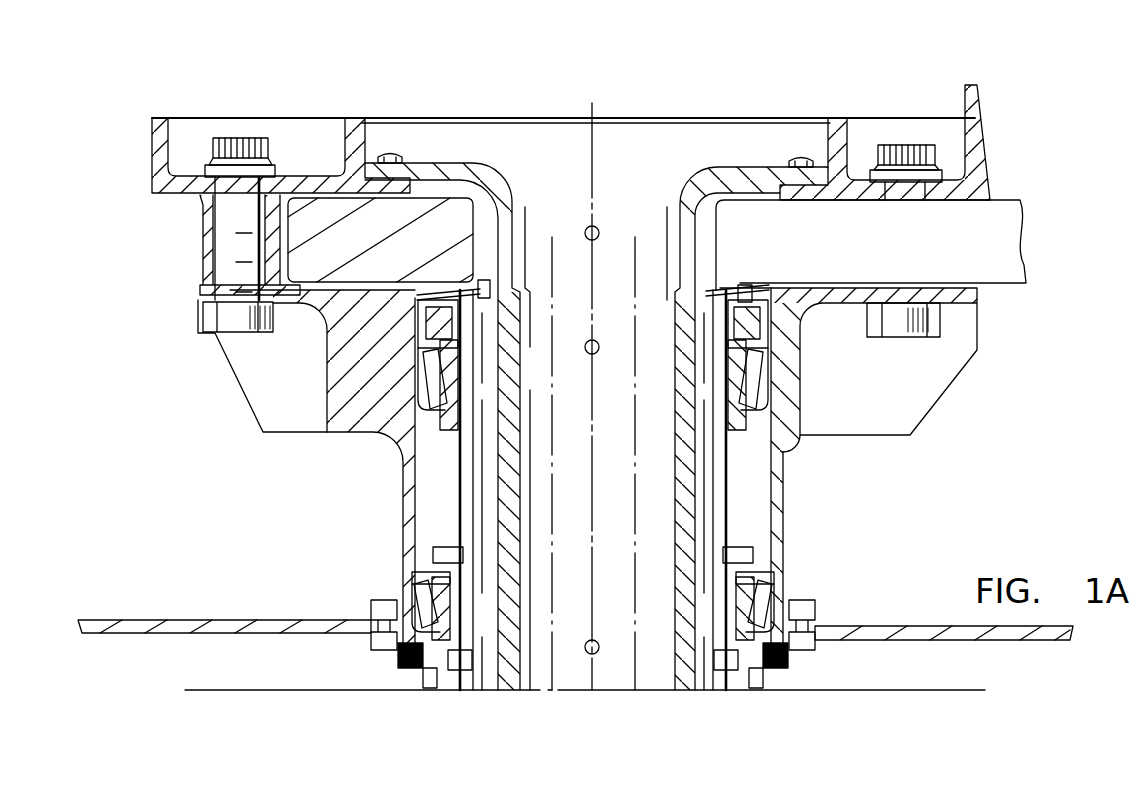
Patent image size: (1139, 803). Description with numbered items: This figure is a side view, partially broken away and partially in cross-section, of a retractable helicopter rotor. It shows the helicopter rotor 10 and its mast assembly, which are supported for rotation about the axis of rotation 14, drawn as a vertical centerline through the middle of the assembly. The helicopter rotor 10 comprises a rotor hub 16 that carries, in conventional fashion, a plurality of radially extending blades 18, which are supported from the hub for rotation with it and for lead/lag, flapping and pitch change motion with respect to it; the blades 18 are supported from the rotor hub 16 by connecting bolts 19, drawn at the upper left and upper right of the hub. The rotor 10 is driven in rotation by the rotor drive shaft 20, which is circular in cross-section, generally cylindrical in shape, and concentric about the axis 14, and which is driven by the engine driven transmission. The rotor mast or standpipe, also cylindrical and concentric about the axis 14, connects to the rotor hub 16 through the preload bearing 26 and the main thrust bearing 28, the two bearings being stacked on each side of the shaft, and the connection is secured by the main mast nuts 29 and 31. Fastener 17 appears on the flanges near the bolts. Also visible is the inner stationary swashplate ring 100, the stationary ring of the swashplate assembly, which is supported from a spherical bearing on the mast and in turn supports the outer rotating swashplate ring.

The helicopter rotor 10 is at (788, 70).
The axis of rotation 14 is at (598, 200).
The rotor hub 16 is at (172, 140).
The fastener 17 is at (392, 156).
The blades 18 is at (1000, 214).
The connecting bolts 19 is at (265, 170).
The rotor drive shaft 20 is at (675, 470).
The preload bearing 26 is at (458, 602).
The main thrust bearing 28 is at (447, 355).
The main mast nut 29 is at (742, 288).
The main mast nut 31 is at (798, 602).
The inner stationary swashplate ring 100 is at (281, 618).